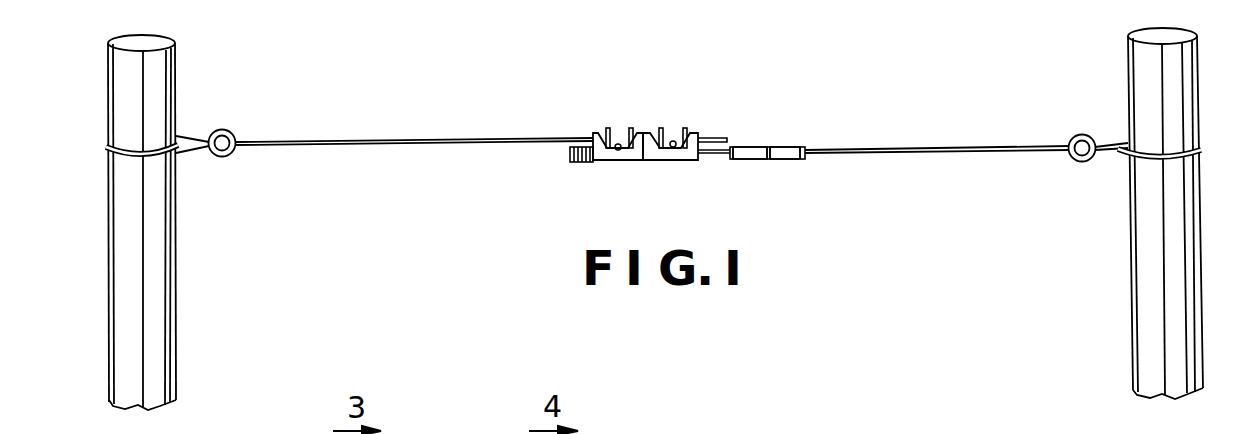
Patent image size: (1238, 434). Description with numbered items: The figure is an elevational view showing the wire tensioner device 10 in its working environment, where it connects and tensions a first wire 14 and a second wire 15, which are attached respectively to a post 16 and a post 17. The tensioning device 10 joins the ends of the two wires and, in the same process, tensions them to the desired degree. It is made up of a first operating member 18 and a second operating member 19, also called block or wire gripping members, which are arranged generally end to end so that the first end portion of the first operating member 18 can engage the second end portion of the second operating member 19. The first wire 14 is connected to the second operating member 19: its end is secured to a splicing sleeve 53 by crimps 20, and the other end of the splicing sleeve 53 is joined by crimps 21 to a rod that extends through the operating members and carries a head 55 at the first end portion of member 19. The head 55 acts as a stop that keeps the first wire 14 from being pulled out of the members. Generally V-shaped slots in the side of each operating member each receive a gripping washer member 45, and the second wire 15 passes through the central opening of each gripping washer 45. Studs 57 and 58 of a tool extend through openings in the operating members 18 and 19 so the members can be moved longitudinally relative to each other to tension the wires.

The wire tensioner device 10 is at (548, 98).
The first wire 14 is at (887, 153).
The second wire 15 is at (305, 147).
The post 16 is at (1155, 237).
The post 17 is at (156, 283).
The first operating member 18 is at (668, 153).
The second operating member 19 is at (608, 153).
The crimps 20 is at (788, 148).
The crimps 21 is at (750, 150).
The gripping washer member 45 is at (631, 128).
The splicing sleeve 53 is at (767, 160).
The head 55 is at (570, 155).
The stud 57 is at (676, 148).
The stud 58 is at (618, 151).